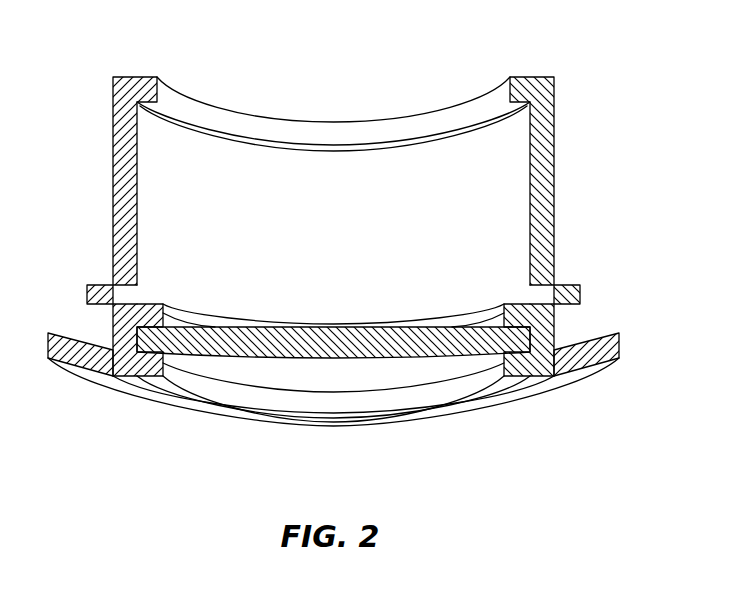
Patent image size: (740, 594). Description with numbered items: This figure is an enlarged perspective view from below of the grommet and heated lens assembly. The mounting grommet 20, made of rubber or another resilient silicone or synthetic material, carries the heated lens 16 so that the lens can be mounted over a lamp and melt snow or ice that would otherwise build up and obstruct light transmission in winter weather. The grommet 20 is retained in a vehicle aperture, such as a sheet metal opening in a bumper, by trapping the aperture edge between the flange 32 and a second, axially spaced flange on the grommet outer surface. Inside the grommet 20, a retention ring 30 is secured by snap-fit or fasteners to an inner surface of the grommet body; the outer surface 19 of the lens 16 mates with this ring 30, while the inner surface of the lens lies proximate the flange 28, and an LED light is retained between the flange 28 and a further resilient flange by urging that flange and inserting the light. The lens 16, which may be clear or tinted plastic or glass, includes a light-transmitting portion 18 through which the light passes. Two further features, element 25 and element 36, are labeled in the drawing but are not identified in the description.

The mounting grommet 20 is at (572, 57).
The membrane 25 is at (170, 103).
The flange 28 is at (190, 322).
The flange 32 is at (566, 291).
The outer ring 36 is at (614, 352).
The retention ring 30 is at (190, 385).
The light-transmitting portion 18 is at (313, 375).
The outer surface 19 is at (375, 370).
The heated lens 16 is at (446, 370).